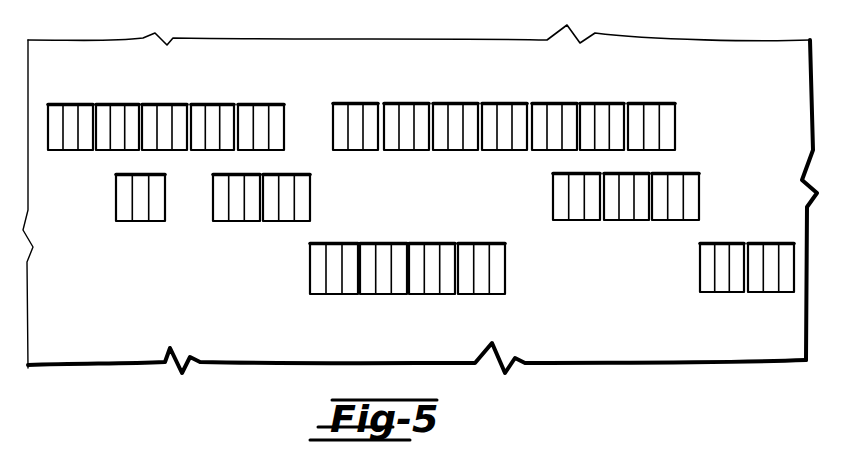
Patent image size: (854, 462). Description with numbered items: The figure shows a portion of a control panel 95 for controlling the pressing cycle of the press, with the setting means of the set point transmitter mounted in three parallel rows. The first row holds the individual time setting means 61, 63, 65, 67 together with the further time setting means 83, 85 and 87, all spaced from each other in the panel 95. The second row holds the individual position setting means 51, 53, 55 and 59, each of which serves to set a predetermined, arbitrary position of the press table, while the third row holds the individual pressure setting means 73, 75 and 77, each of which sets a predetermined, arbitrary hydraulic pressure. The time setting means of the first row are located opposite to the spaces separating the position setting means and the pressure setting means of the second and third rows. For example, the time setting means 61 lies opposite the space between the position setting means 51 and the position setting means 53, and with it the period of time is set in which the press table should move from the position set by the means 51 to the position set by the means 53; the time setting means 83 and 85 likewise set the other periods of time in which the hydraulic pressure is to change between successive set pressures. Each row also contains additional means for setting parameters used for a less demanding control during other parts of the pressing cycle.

The position setting means 51 is at (330, 294).
The position setting means 53 is at (392, 307).
The position setting means 55 is at (445, 307).
The means for determining the length of travel 59 is at (497, 307).
The time setting means 61 is at (357, 103).
The time setting means 63 is at (405, 103).
The time setting means 65 is at (450, 103).
The time setting means 67 is at (500, 103).
The pressure setting means 73 is at (578, 220).
The pressure setting means 75 is at (627, 220).
The pressure setting means 77 is at (672, 220).
The time setting means 83 is at (618, 78).
The time setting means 85 is at (668, 78).
The display segment 87 is at (570, 78).
The control panel 95 is at (632, 352).